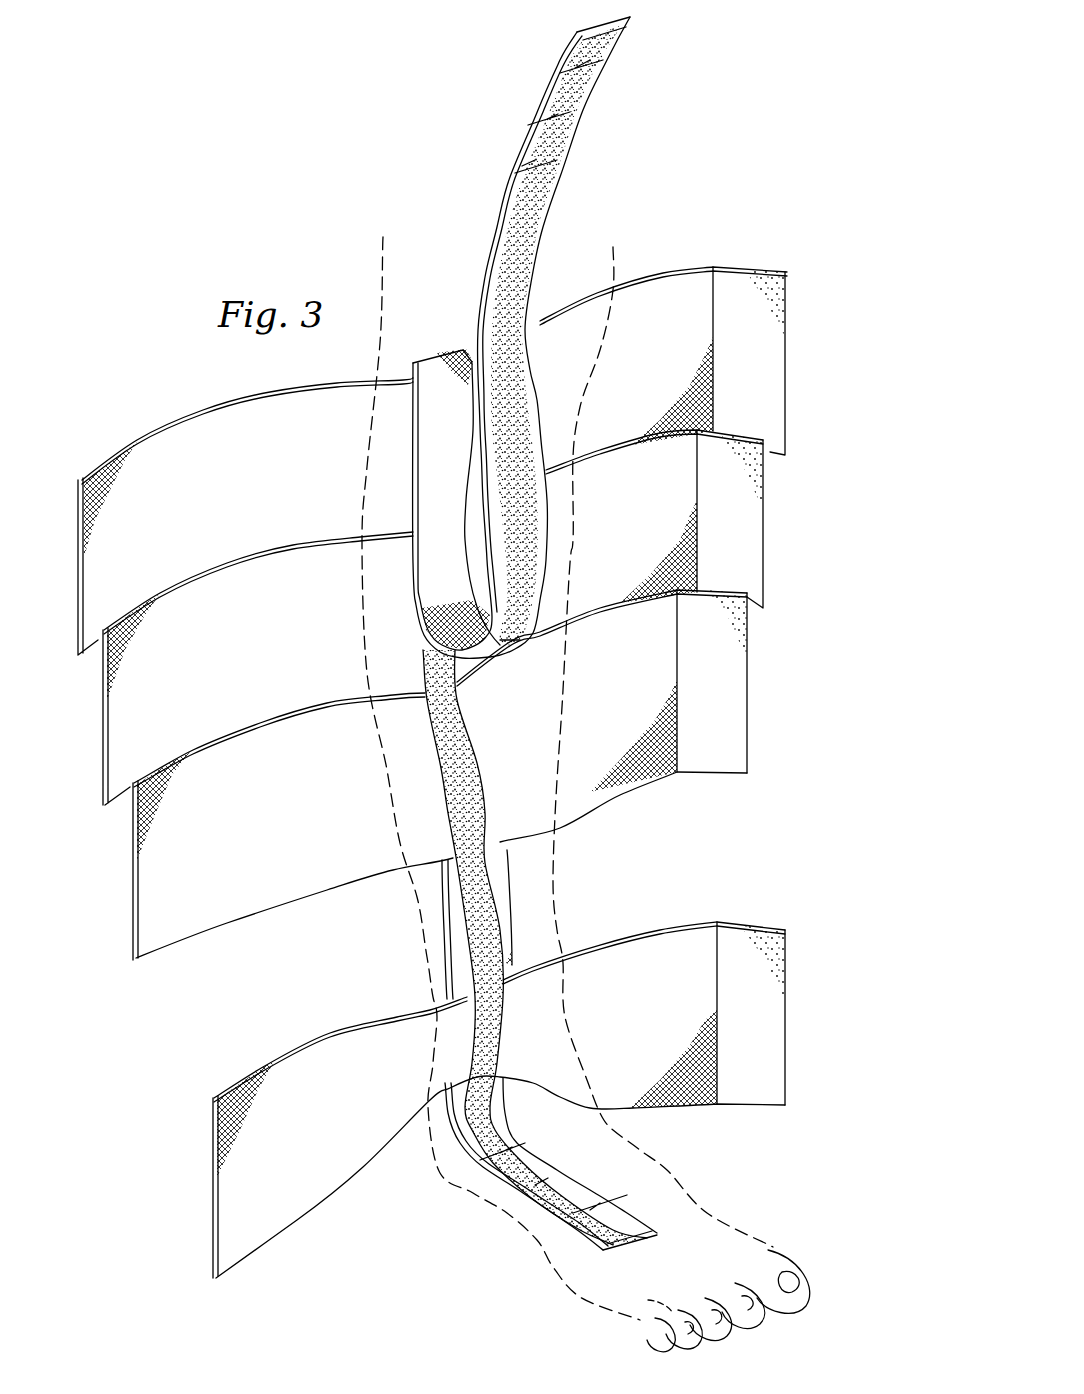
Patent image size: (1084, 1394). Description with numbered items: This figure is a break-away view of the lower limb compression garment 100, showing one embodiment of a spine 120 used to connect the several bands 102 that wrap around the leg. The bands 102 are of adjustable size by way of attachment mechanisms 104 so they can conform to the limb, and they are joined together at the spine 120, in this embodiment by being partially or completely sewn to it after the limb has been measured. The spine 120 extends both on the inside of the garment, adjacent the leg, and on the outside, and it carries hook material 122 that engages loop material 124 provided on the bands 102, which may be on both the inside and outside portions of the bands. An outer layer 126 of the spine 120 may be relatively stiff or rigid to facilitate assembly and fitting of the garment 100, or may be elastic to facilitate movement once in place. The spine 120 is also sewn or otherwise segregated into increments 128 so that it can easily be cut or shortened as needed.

The lower limb compression garment 100 is at (731, 193).
The bands 102 is at (77, 572).
The attachment mechanisms 104 is at (787, 320).
The spine 120 is at (542, 633).
The hook material 122 is at (547, 199).
The loop material 124 is at (457, 773).
The outer layer 126 is at (573, 134).
The increments 128 is at (575, 73).